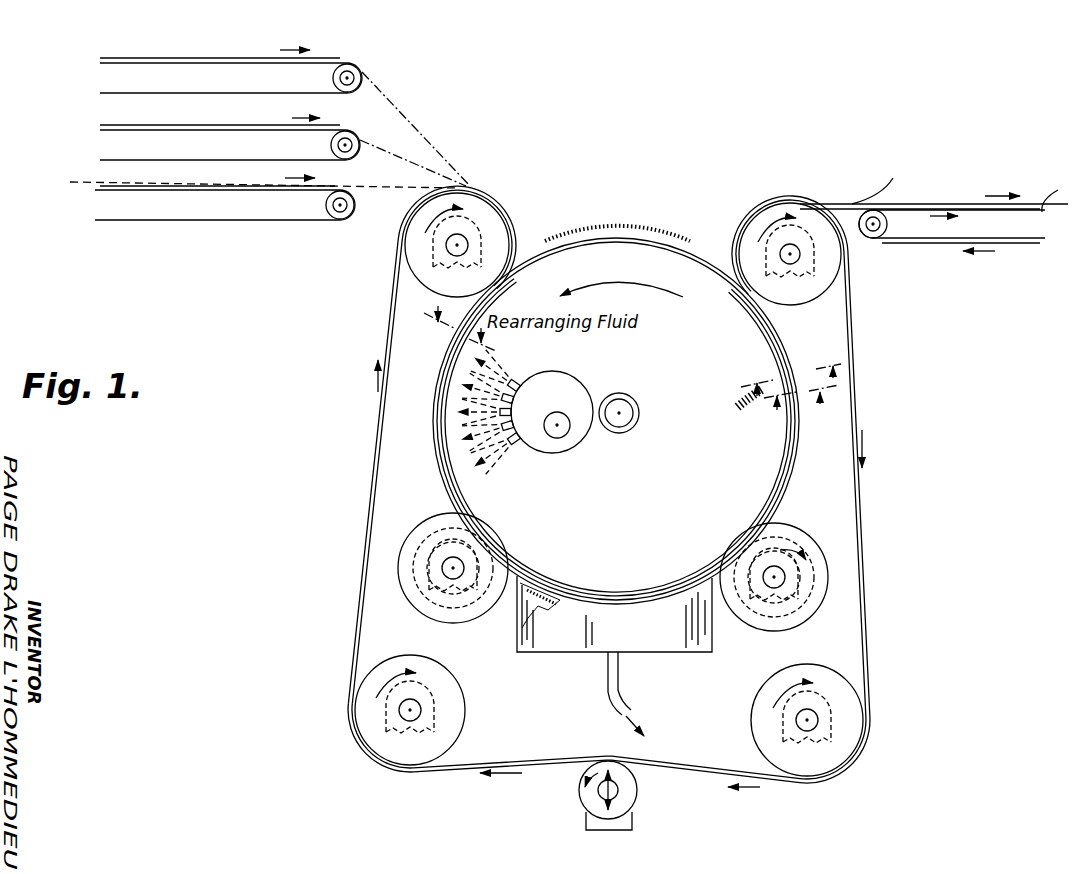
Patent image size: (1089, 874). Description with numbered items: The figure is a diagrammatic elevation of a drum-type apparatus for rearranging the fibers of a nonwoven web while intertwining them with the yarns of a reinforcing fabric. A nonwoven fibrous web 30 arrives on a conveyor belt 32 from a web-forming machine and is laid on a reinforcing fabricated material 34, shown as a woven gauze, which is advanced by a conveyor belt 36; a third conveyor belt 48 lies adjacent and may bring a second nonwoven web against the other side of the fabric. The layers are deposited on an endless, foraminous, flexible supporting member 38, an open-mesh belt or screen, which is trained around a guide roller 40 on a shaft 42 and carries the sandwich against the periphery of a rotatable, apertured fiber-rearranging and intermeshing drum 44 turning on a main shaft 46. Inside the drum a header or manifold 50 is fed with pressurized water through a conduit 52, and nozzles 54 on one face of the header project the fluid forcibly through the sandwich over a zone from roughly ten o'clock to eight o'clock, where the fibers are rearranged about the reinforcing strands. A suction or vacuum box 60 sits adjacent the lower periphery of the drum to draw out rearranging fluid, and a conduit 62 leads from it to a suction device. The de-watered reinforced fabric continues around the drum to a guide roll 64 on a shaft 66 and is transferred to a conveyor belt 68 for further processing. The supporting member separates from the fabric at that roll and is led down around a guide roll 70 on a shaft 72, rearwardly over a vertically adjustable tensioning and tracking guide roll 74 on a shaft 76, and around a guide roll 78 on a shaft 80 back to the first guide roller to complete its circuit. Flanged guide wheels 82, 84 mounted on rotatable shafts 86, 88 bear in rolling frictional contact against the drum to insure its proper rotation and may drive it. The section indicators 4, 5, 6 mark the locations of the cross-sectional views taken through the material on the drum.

The nonwoven fibrous web 30 is at (88, 55).
The conveyor belt 32 is at (110, 90).
The reinforcing fabricated material 34 is at (98, 124).
The conveyor belt 36 is at (110, 128).
The third conveyor belt 48 is at (108, 216).
The foraminous supporting member 38 is at (382, 433).
The guide roller 40 is at (408, 246).
The shaft 42 is at (450, 252).
The fiber-rearranging and intermeshing drum 44 is at (620, 240).
The main shaft 46 is at (636, 410).
The header or manifold 50 is at (568, 386).
The conduit 52 is at (557, 427).
The nozzles or jets 54 is at (509, 381).
The suction or vacuum box 60 is at (634, 634).
The conduit 62 is at (626, 702).
The guide roll 64 is at (823, 268).
The shaft 66 is at (792, 262).
The conveyor belt 68 is at (1006, 250).
The guide roll 70 is at (848, 738).
The shaft 72 is at (805, 720).
The tensioning and tracking guide roll 74 is at (583, 800).
The shaft 76 is at (620, 795).
The guide roll 78 is at (372, 722).
The shaft 80 is at (418, 712).
The flanged guide wheel 82 is at (433, 612).
The flanged guide wheel 84 is at (810, 610).
The rotatable shaft 86 is at (453, 566).
The rotatable shaft 88 is at (776, 576).
The section line 4- 4 is at (460, 335).
The section line 5- 5 is at (801, 406).
The section line 6- 6 is at (791, 369).